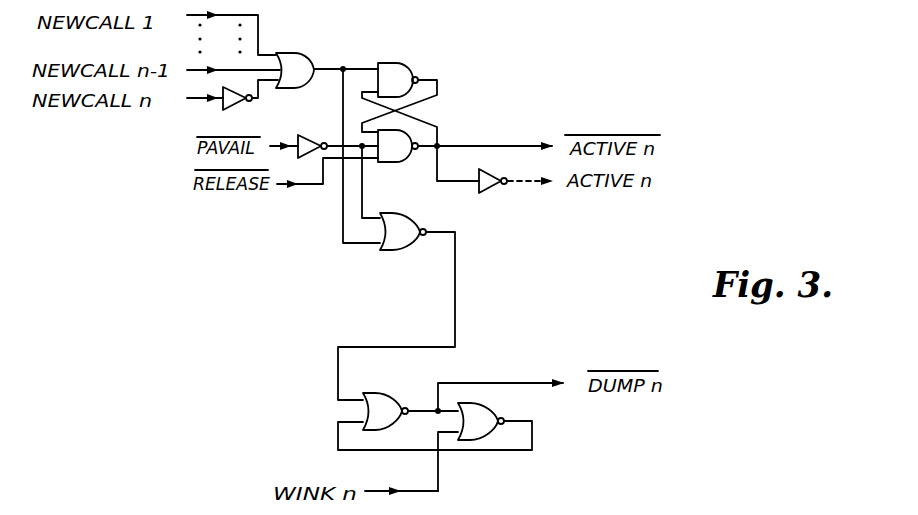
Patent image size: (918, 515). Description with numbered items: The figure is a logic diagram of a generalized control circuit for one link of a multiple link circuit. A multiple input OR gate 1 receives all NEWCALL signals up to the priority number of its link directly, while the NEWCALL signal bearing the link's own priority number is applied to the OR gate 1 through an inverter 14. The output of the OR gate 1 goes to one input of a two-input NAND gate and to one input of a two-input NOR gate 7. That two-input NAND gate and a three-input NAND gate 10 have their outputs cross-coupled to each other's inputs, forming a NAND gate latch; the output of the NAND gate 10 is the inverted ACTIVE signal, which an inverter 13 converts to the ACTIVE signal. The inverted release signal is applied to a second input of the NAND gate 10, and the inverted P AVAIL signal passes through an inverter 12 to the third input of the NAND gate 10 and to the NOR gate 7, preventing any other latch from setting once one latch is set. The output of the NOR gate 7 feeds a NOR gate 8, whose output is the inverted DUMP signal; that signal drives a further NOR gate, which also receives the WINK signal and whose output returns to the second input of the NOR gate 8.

The multiple input OR gate 1 is at (302, 53).
The three-input NAND gate 10 is at (398, 159).
The two-input NOR gate 7 is at (395, 244).
The two-input NOR gate 8 is at (383, 400).
The inverter 12 is at (311, 137).
The inverter 13 is at (492, 191).
The inverter 14 is at (250, 104).